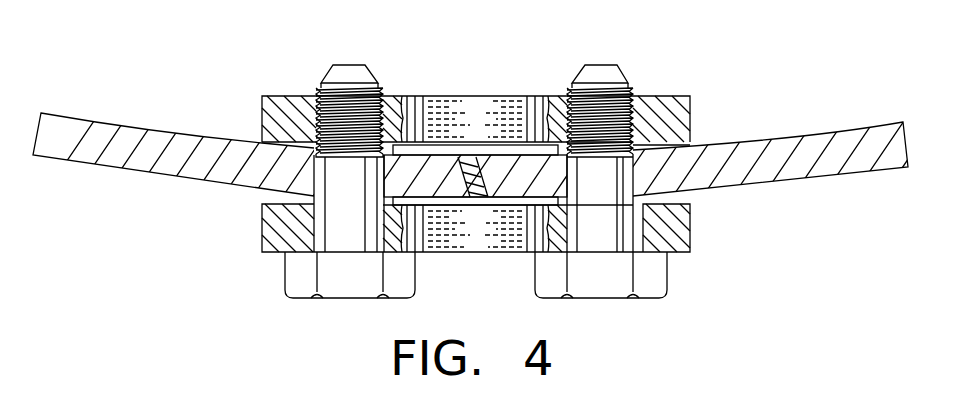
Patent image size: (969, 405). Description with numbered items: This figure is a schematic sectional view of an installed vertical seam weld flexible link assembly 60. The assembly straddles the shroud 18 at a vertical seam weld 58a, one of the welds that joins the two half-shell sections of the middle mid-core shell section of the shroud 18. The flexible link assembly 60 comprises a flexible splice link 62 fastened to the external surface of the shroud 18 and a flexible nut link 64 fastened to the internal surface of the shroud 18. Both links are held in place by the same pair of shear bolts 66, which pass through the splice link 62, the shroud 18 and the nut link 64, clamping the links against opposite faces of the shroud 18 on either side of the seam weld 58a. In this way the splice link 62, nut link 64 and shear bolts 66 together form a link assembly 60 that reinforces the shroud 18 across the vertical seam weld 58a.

The shroud 18 is at (783, 183).
The vertical seam weld 58a is at (457, 177).
The flexible link assembly 60 is at (275, 67).
The flexible splice link 62 is at (690, 230).
The flexible nut link 64 is at (691, 97).
The shear bolts 66 is at (284, 279).